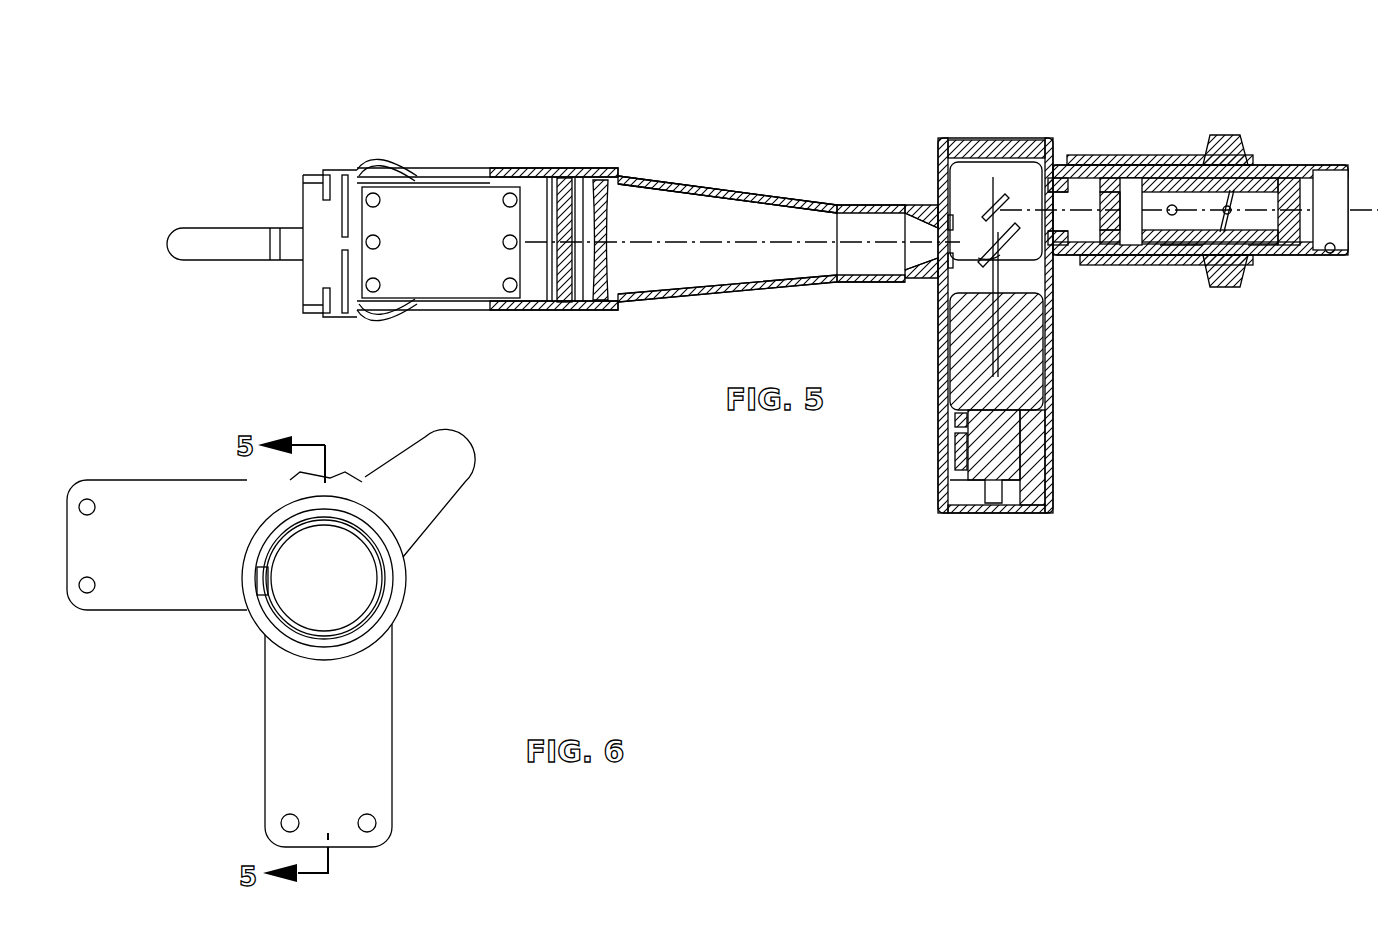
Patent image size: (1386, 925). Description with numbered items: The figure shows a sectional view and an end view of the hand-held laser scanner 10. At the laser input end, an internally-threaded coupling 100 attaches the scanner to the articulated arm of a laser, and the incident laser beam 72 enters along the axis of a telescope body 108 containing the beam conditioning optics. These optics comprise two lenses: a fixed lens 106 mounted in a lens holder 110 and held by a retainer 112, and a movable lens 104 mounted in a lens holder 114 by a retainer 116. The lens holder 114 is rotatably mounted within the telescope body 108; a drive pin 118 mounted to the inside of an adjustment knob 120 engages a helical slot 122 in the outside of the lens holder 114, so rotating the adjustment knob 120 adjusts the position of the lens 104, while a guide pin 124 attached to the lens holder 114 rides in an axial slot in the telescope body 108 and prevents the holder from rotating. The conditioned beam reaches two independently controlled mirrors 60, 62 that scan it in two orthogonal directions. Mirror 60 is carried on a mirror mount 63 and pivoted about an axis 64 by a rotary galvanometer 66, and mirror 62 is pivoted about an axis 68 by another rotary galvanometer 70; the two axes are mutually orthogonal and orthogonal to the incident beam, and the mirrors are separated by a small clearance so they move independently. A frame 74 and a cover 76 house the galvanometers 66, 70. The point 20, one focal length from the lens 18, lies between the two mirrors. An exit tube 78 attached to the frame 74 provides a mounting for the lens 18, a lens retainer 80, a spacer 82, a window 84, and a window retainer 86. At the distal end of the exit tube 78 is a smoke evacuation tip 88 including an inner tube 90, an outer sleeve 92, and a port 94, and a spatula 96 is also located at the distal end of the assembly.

In FIG. 5, the laser scanner 10 is at (777, 140).
In FIG. 6, the laser scanner 10 is at (465, 580).
In FIG. 5, the lens 18 is at (615, 292).
In FIG. 5, the point 20 is at (975, 222).
In FIG. 5, the mirror 60 is at (938, 232).
In FIG. 5, the mirror 62 is at (1013, 223).
In FIG. 5, the mirror mount 63 is at (1040, 265).
In FIG. 5, the axis 64 is at (990, 338).
In FIG. 5, the rotary galvanometer 66 is at (1005, 428).
In FIG. 5, the axis 68 is at (993, 200).
In FIG. 5, the rotary galvanometer 70 is at (982, 217).
In FIG. 5, the incident laser beam 72 is at (1355, 205).
In FIG. 5, the frame 74 is at (1050, 490).
In FIG. 5, the cover 76 is at (940, 428).
In FIG. 6, the cover 76 is at (392, 770).
In FIG. 5, the exit tube 78 is at (680, 190).
In FIG. 5, the lens retainer 80 is at (575, 185).
In FIG. 5, the spacer 82 is at (583, 305).
In FIG. 5, the window 84 is at (558, 224).
In FIG. 5, the window retainer 86 is at (553, 185).
In FIG. 5, the smoke evacuation tip 88 is at (423, 162).
In FIG. 5, the inner tube 90 is at (390, 306).
In FIG. 5, the outer sleeve 92 is at (478, 318).
In FIG. 6, the port 94 is at (462, 494).
In FIG. 5, the spatula 96 is at (240, 262).
In FIG. 5, the internally-threaded coupling 100 is at (1298, 258).
In FIG. 5, the lens 104 is at (1292, 252).
In FIG. 5, the lens 106 is at (1110, 245).
In FIG. 5, the telescope body 108 is at (1290, 165).
In FIG. 5, the lens holder 110 is at (1100, 262).
In FIG. 5, the retainer 112 is at (1128, 178).
In FIG. 5, the lens holder 114 is at (1230, 190).
In FIG. 5, the retainer 116 is at (1298, 178).
In FIG. 5, the drive pin 118 is at (1250, 256).
In FIG. 5, the adjustment knob 120 is at (1222, 134).
In FIG. 5, the helical slot 122 is at (1188, 258).
In FIG. 5, the guide pin 124 is at (1172, 204).